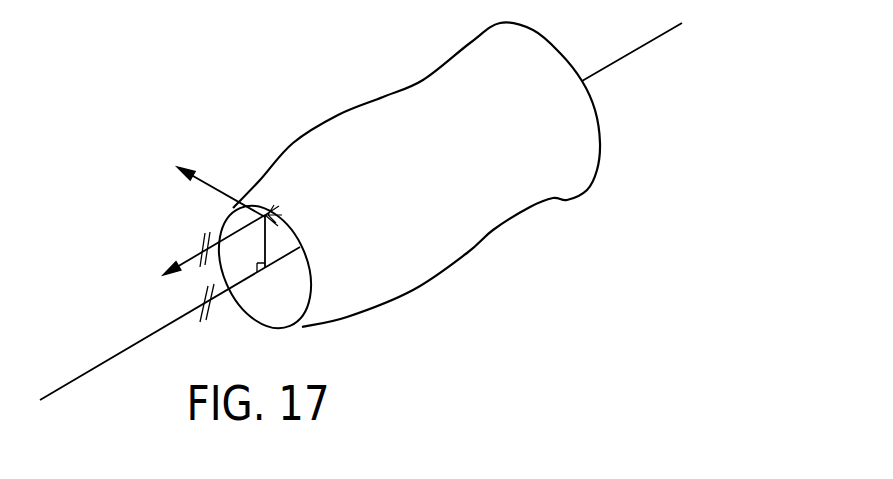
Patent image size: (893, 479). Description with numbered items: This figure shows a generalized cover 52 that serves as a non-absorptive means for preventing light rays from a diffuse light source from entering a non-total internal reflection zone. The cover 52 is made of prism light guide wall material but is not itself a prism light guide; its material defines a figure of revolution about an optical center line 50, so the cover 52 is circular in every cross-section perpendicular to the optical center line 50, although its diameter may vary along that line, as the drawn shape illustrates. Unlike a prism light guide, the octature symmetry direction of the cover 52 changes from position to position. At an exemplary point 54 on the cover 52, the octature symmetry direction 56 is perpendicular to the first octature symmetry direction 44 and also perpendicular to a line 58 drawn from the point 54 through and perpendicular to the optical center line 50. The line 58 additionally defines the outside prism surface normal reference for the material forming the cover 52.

The first octature symmetry direction 44 is at (183, 260).
The optical center line 50 is at (68, 383).
The cover 52 is at (333, 142).
The exemplary point 54 is at (267, 212).
The octature symmetry direction 56 is at (205, 177).
The line 58 is at (267, 250).